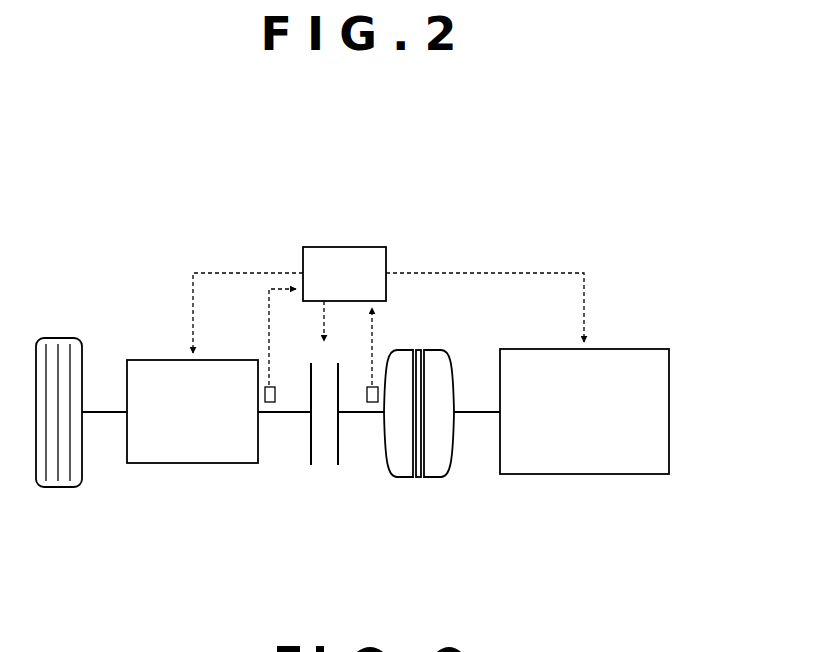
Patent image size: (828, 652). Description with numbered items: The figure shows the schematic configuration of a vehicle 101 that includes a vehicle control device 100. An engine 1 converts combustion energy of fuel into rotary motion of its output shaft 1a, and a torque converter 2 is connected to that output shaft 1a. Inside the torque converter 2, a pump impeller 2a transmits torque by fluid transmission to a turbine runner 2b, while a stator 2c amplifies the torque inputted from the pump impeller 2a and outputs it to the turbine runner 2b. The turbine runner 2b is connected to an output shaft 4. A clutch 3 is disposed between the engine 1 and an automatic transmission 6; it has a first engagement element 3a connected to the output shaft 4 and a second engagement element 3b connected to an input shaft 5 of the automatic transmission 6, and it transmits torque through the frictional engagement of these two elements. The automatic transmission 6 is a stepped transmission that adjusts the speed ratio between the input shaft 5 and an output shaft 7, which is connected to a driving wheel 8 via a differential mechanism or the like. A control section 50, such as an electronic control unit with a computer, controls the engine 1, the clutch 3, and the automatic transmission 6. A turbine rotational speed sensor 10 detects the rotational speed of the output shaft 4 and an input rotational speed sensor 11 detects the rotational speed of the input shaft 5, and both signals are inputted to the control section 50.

The engine 1 is at (640, 349).
The output shaft 1a is at (473, 412).
The torque converter 2 is at (414, 418).
The pump impeller 2a is at (433, 478).
The turbine runner 2b is at (400, 478).
The stator 2c is at (418, 480).
The clutch 3 is at (323, 409).
The first engagement element 3a is at (339, 448).
The second engagement element 3b is at (309, 448).
The output shaft 4 is at (350, 412).
The input shaft 5 is at (285, 412).
The automatic transmission 6 is at (236, 360).
The output shaft 7 is at (98, 412).
The driving wheel 8 is at (64, 338).
The turbine rotational speed sensor 10 is at (370, 414).
The input rotational speed sensor 11 is at (270, 414).
The control section 50 is at (370, 247).
The vehicle control device 100 is at (300, 217).
The vehicle 101 is at (172, 154).